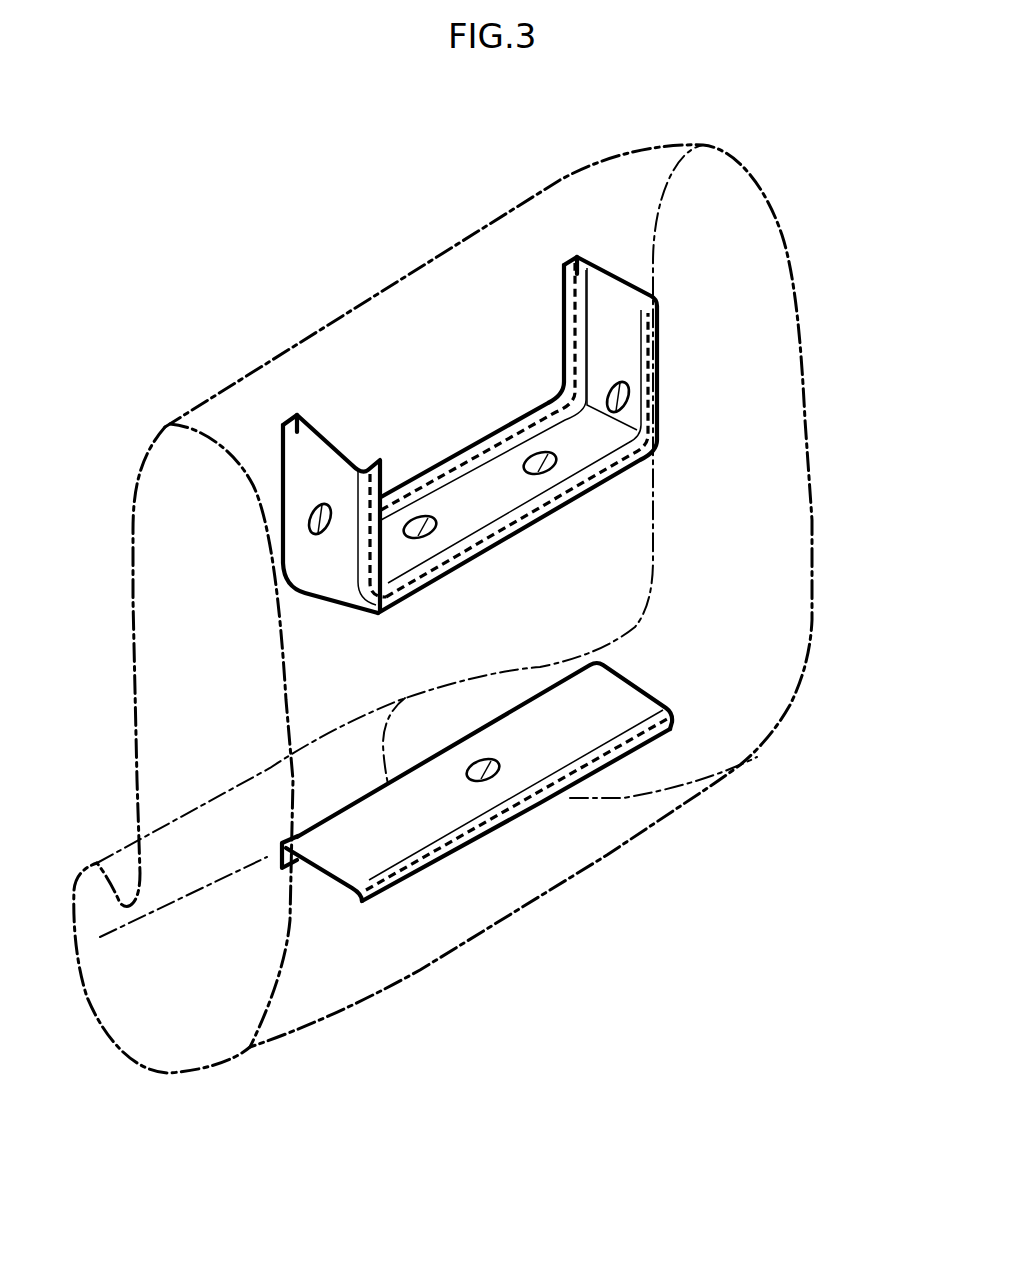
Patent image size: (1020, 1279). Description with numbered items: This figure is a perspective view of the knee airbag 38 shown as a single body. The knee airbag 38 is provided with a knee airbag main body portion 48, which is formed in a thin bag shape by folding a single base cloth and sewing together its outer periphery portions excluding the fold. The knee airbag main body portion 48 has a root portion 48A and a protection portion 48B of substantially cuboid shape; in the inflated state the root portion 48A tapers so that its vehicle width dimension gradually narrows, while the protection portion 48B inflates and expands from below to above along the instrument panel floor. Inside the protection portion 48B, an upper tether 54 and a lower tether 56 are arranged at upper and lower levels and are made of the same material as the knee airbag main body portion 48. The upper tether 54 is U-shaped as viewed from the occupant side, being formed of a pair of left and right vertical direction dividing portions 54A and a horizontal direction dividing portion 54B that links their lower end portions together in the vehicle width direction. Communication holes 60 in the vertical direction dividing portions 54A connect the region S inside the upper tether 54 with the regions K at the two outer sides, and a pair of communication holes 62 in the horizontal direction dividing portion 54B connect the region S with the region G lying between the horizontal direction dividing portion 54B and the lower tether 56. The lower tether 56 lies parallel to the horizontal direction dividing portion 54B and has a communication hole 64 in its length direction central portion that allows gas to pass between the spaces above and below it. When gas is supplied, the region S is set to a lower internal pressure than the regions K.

The knee airbag main body portion 48 is at (465, 571).
The knee airbag 38 is at (465, 609).
The root portion 48A is at (99, 866).
The protection portion 48B is at (808, 463).
The upper tether 54 is at (411, 419).
The vertical direction dividing portions 54A is at (620, 268).
The horizontal direction dividing portion 54B is at (545, 510).
The lower tether 56 is at (477, 870).
The communication holes 60 is at (308, 518).
The communication holes 62 is at (425, 515).
The communication hole 64 is at (490, 760).
The region inside the upper tether S is at (452, 410).
The regions at the two outer sides of the vertical direction dividing portions K is at (710, 337).
The region between the horizontal direction dividing portion and the lower tether G is at (500, 647).